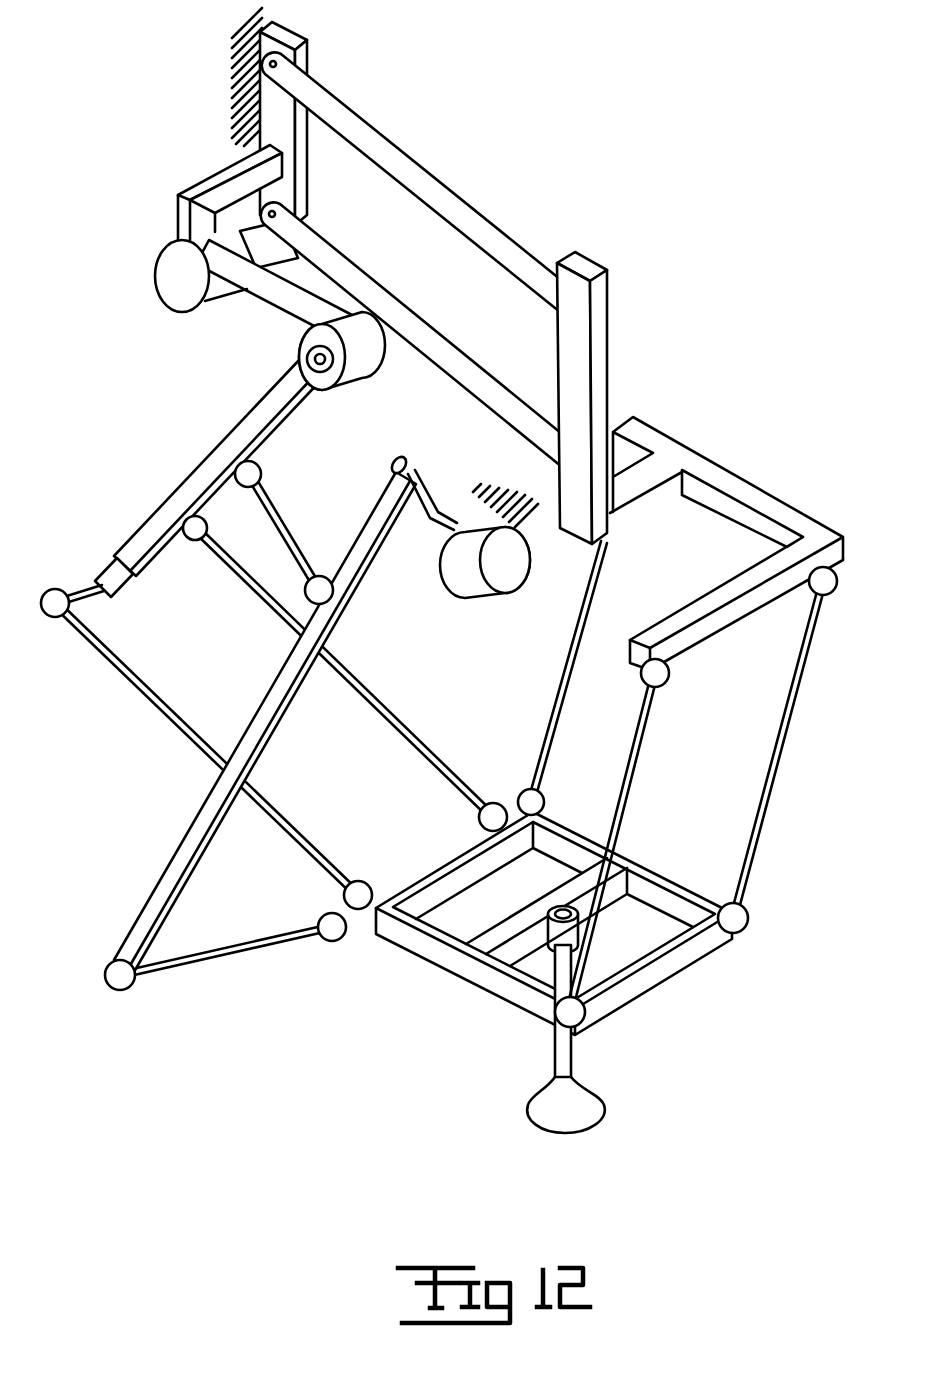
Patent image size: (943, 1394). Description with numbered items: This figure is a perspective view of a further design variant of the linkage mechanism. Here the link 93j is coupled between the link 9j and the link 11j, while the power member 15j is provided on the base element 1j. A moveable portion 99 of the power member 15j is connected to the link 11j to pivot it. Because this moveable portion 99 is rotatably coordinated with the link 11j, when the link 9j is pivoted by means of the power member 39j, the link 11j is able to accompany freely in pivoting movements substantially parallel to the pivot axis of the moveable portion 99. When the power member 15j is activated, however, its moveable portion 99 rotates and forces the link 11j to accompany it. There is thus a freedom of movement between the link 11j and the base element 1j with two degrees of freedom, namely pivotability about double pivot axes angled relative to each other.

The base element 1j is at (503, 487).
The link 9j is at (202, 473).
The link 11j is at (272, 713).
The power member 15j is at (492, 572).
The power member 39j is at (358, 340).
The link 93j is at (292, 537).
The moveable portion 99 is at (427, 520).